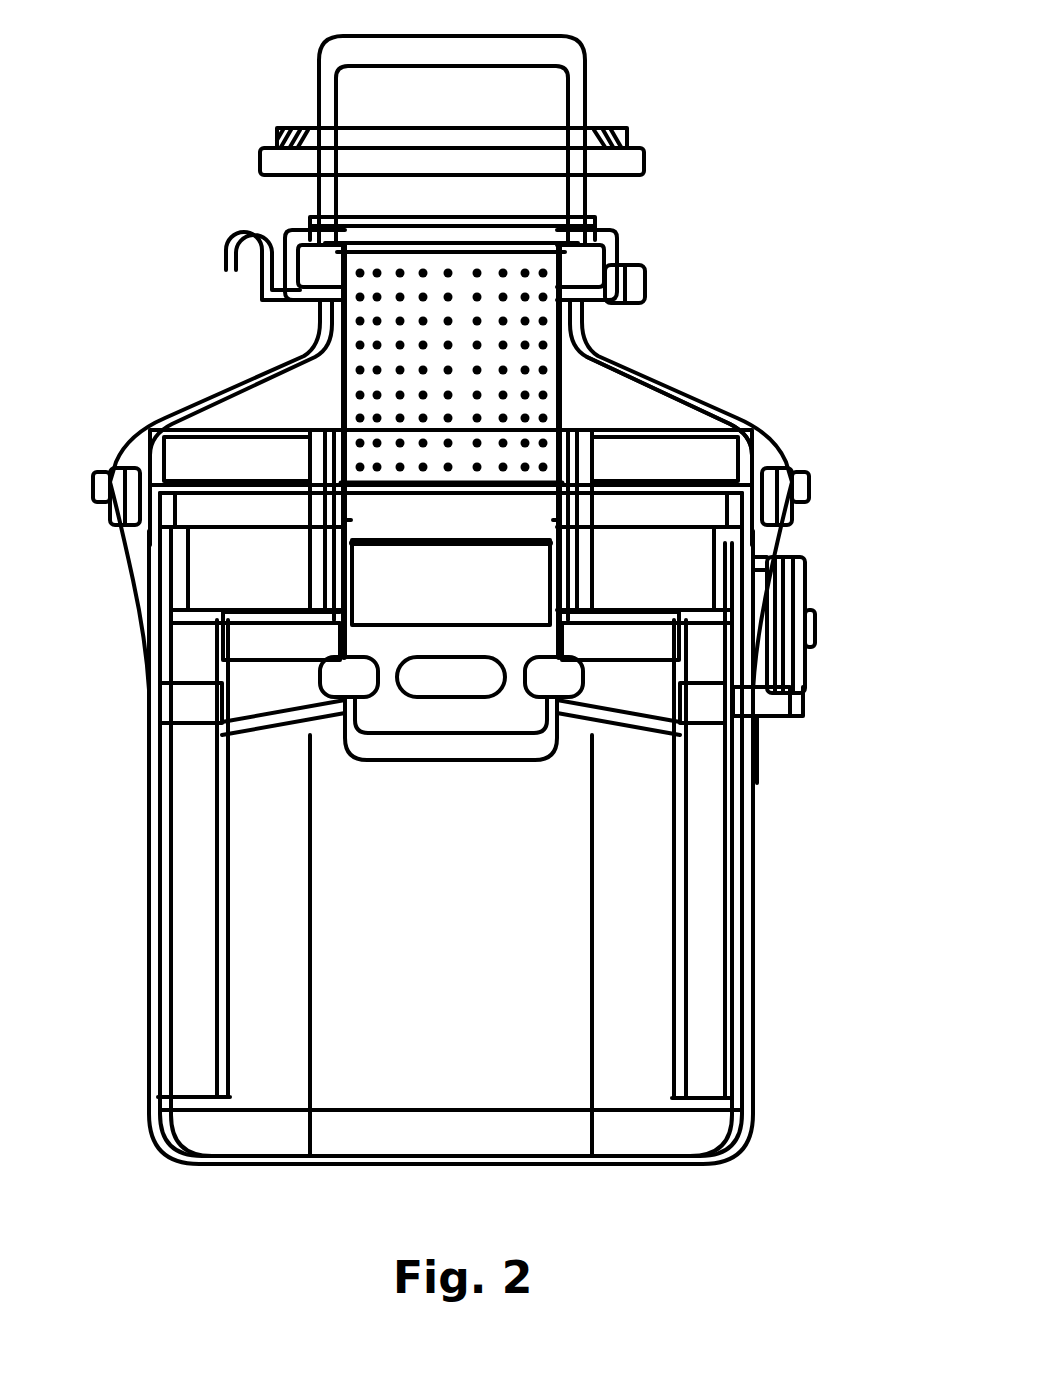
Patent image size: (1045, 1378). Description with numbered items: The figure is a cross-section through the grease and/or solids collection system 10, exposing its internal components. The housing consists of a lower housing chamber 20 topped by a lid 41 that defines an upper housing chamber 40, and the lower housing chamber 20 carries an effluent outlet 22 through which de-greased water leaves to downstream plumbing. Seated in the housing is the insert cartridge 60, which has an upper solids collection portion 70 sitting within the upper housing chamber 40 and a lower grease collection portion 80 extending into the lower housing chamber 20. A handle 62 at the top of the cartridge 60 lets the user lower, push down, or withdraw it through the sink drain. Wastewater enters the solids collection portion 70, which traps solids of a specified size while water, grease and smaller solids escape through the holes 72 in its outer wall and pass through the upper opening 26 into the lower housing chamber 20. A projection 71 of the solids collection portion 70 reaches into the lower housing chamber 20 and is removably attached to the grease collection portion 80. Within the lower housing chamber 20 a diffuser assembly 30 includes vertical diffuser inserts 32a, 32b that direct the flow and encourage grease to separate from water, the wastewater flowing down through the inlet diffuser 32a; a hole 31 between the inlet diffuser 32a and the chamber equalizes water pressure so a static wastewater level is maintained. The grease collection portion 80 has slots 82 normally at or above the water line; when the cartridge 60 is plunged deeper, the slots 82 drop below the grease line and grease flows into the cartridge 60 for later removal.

The grease and/or solids collection system 10 is at (158, 128).
The lower housing chamber 20 is at (745, 1143).
The effluent outlet 22 is at (812, 665).
The upper opening 26 is at (207, 600).
The diffuser assembly 30 is at (245, 1050).
The hole 31 is at (195, 710).
The inlet diffuser 32a is at (195, 1068).
The vertical diffuser insert 32b is at (717, 1043).
The upper housing chamber 40 is at (650, 414).
The lid 41 is at (642, 385).
The insert cartridge 60 is at (622, 95).
The handle 62 is at (318, 68).
The upper solids collection portion 70 is at (565, 355).
The projection 71 is at (354, 595).
The holes 72 is at (427, 270).
The lower grease collection portion 80 is at (562, 757).
The slots 82 is at (463, 700).